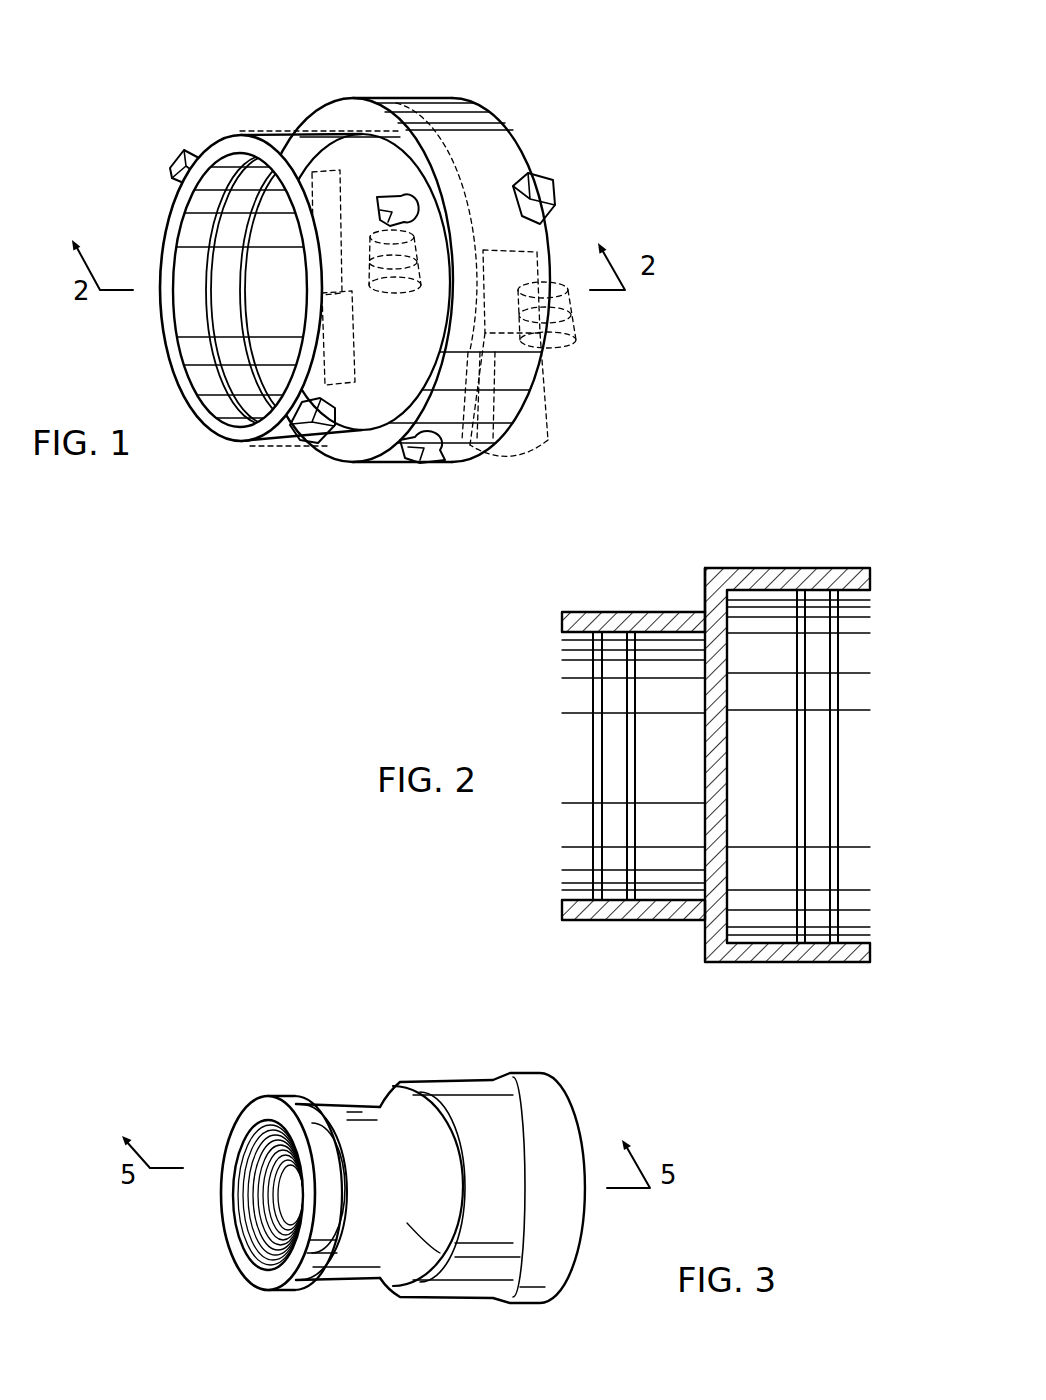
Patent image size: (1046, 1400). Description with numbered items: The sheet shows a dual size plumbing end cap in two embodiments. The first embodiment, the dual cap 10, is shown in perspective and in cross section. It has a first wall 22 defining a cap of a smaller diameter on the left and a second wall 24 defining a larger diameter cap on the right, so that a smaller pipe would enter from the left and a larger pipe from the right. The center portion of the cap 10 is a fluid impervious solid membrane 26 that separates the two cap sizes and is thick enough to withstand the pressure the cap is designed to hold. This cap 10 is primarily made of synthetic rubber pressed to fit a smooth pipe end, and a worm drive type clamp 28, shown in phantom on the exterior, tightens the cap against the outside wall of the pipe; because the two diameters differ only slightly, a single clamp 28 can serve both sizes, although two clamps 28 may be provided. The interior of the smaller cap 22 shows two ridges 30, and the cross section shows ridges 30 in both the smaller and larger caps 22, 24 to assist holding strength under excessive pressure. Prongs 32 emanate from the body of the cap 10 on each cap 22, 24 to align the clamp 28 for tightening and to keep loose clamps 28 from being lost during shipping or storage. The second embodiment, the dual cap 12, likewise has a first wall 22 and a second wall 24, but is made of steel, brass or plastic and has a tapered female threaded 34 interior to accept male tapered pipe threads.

In FIG. 1, the dual cap 10 is at (240, 70).
In FIG. 2, the dual cap 10 is at (760, 446).
In FIG. 3, the dual cap 12 is at (240, 1052).
In FIG. 1, the first wall 22 is at (168, 245).
In FIG. 2, the first wall 22 is at (630, 612).
In FIG. 3, the first wall 22 is at (318, 1122).
In FIG. 1, the second wall 24 is at (505, 133).
In FIG. 2, the second wall 24 is at (803, 575).
In FIG. 3, the second wall 24 is at (480, 1092).
In FIG. 2, the membrane 26 is at (716, 650).
In FIG. 1, the clamp 28 is at (388, 370).
In FIG. 1, the ridges 30 is at (232, 413).
In FIG. 2, the ridges 30 is at (594, 748).
In FIG. 1, the prongs 32 is at (395, 205).
In FIG. 3, the tapered female thread 34 is at (253, 1253).